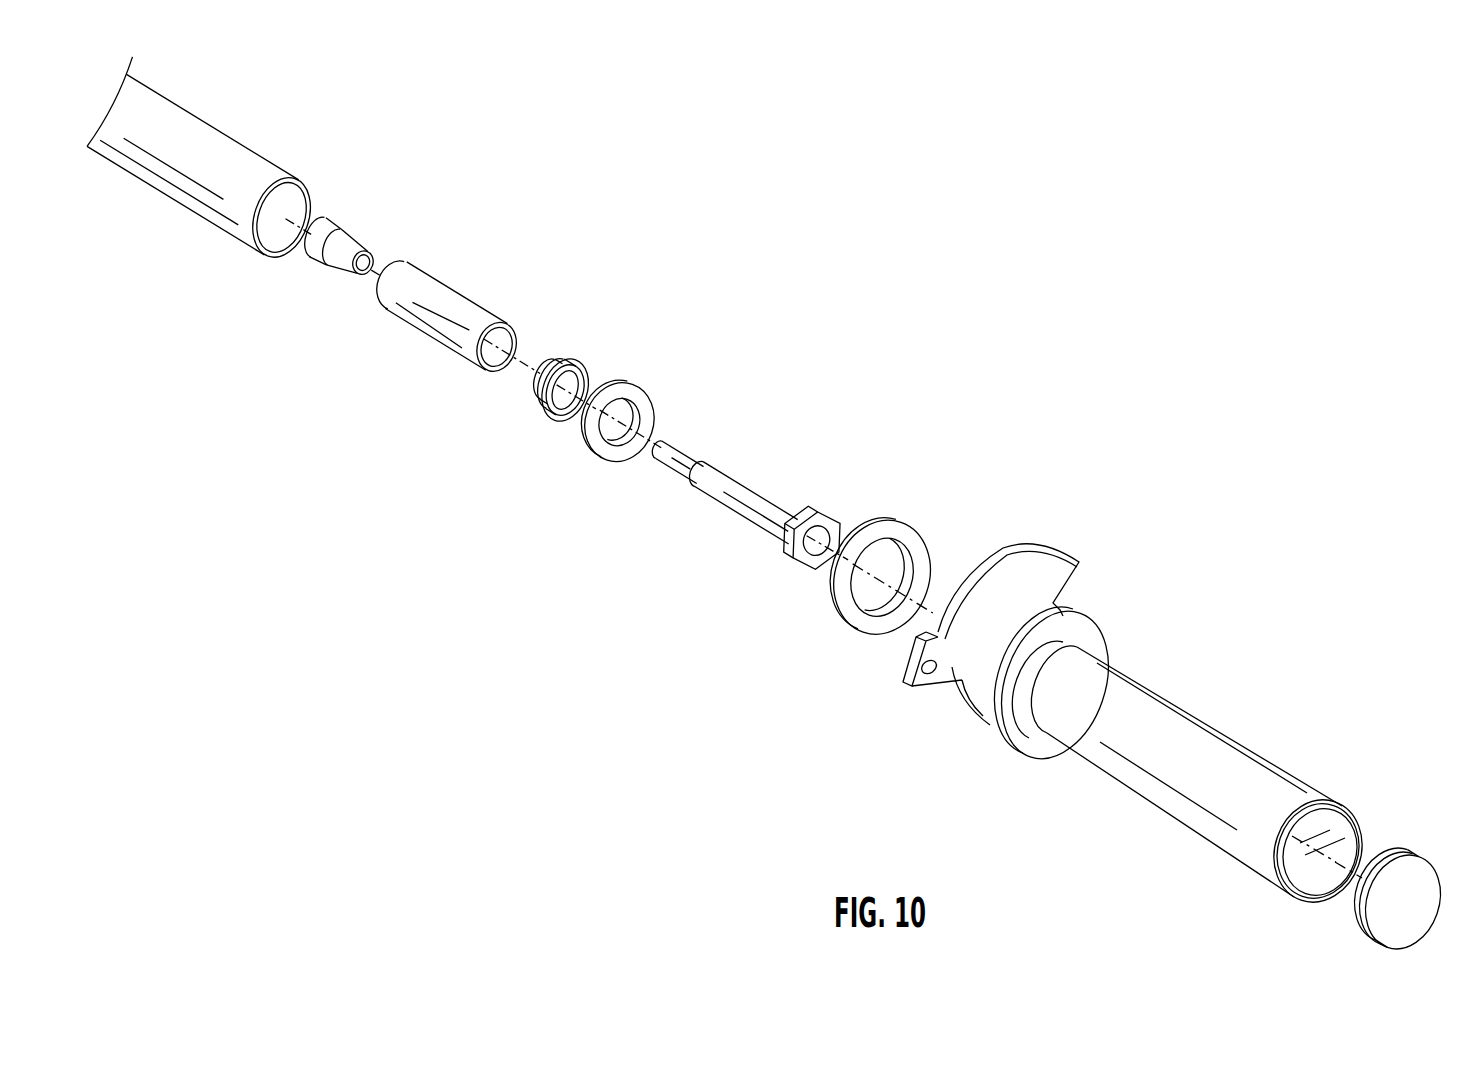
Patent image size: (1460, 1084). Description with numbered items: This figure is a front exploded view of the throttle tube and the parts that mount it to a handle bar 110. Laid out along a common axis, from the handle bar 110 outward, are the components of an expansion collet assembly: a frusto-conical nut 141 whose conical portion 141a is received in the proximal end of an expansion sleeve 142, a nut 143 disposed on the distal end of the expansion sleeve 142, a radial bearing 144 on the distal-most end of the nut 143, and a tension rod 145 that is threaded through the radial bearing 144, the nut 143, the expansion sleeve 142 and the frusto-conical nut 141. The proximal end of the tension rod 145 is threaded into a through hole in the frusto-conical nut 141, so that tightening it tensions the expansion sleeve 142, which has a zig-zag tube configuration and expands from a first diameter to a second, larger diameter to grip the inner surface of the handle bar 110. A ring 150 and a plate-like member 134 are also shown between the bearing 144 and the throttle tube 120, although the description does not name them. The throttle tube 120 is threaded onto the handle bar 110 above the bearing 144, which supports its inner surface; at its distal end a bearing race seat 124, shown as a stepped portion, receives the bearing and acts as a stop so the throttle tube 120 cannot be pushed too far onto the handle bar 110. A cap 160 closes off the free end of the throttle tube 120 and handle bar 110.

The handle bar 110 is at (243, 165).
The frusto-conical nut 141 is at (338, 222).
The conical portion 141a is at (366, 244).
The expansion sleeve 142 is at (450, 292).
The nut 143 is at (558, 342).
The radial bearing 144 is at (650, 390).
The tension rod 145 is at (740, 472).
The seal ring 150 is at (880, 632).
The indicator plate 134 is at (952, 670).
The throttle tube 120 is at (1173, 742).
The bearing race seat 124 is at (1313, 883).
The cap 160 is at (1420, 873).